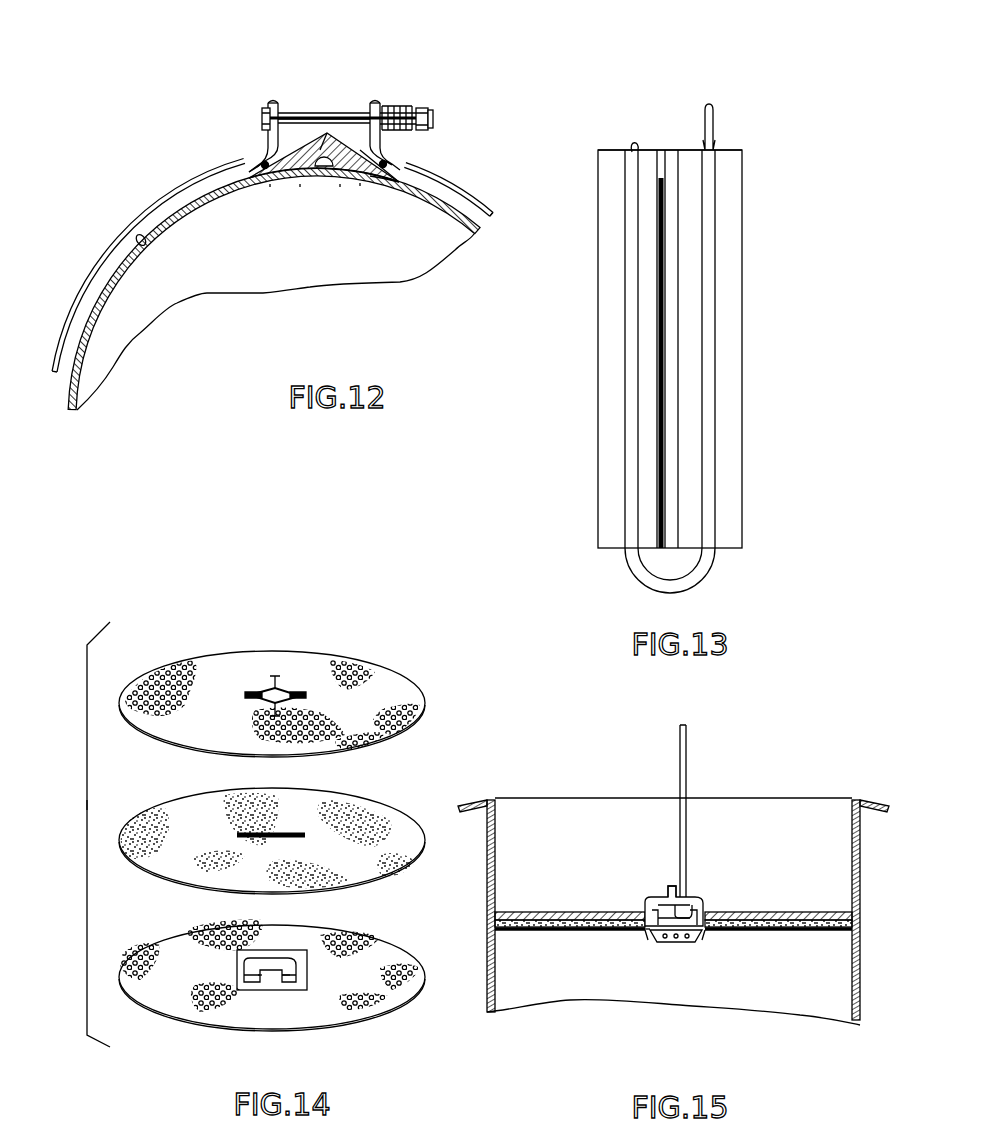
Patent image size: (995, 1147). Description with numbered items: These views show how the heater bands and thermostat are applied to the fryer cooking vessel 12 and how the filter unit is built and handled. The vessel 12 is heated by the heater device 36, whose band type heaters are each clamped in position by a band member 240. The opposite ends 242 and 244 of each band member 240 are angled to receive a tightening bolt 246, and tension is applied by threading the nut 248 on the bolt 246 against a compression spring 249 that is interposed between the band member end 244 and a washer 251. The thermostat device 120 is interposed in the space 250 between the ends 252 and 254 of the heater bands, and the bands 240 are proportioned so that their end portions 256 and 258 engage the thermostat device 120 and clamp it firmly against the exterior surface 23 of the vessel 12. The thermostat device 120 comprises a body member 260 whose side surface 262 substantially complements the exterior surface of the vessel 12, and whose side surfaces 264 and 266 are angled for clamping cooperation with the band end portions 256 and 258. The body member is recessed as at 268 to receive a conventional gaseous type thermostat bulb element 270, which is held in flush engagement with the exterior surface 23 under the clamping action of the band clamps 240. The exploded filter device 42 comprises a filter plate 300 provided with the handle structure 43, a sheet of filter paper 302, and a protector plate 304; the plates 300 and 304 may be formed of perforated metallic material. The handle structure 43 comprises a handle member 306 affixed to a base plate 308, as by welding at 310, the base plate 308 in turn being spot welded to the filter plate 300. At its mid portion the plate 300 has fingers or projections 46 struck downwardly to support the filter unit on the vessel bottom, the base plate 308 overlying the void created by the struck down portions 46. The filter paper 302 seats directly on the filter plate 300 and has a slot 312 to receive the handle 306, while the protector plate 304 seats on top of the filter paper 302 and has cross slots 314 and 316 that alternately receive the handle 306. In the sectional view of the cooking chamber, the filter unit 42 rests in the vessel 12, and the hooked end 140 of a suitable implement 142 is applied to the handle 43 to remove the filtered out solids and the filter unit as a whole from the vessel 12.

In FIG. 12, the vessel 12 is at (95, 292).
In FIG. 15, the vessel 12 is at (487, 995).
In FIG. 12, the exterior surface 23 is at (143, 246).
In FIG. 12, the heater device 36 is at (482, 198).
In FIG. 14, the filter device 42 is at (180, 1035).
In FIG. 14, the handle structure 43 is at (325, 945).
In FIG. 15, the handle structure 43 is at (705, 900).
In FIG. 15, the legs or projections 46 is at (690, 942).
In FIG. 12, the thermostat device 120 is at (326, 132).
In FIG. 13, the thermostat device 120 is at (770, 150).
In FIG. 15, the hooked end 140 is at (686, 887).
In FIG. 15, the implement 142 is at (686, 775).
In FIG. 12, the band member 240 is at (155, 200).
In FIG. 12, the band member end 242 is at (271, 104).
In FIG. 12, the band member end 244 is at (395, 102).
In FIG. 12, the tightening bolt 246 is at (310, 115).
In FIG. 12, the nut 248 is at (440, 114).
In FIG. 12, the compression spring 249 is at (430, 108).
In FIG. 12, the space 250 is at (258, 160).
In FIG. 12, the washer 251 is at (437, 126).
In FIG. 12, the heater band end 252 is at (245, 180).
In FIG. 12, the heater band end 254 is at (395, 184).
In FIG. 12, the band end portion 256 is at (258, 150).
In FIG. 12, the band end portion 258 is at (395, 150).
In FIG. 12, the body member 260 is at (343, 186).
In FIG. 13, the body member 260 is at (742, 265).
In FIG. 12, the side surface 262 is at (302, 187).
In FIG. 13, the side surface 262 is at (742, 198).
In FIG. 12, the side surface 264 is at (276, 100).
In FIG. 12, the side surface 266 is at (355, 132).
In FIG. 12, the recess 268 is at (270, 186).
In FIG. 13, the thermostat bulb element 270 is at (636, 150).
In FIG. 14, the filter plate 300 is at (345, 1015).
In FIG. 15, the filter plate 300 is at (580, 932).
In FIG. 14, the filter paper 302 is at (406, 814).
In FIG. 15, the filter paper 302 is at (542, 929).
In FIG. 14, the protector plate 304 is at (395, 690).
In FIG. 15, the protector plate 304 is at (566, 908).
In FIG. 14, the handle member 306 is at (290, 975).
In FIG. 14, the base plate 308 is at (273, 985).
In FIG. 15, the base plate 308 is at (647, 932).
In FIG. 14, the weld 310 is at (297, 990).
In FIG. 14, the slot 312 is at (297, 834).
In FIG. 14, the cross slot 314 is at (255, 690).
In FIG. 14, the cross slot 316 is at (285, 682).